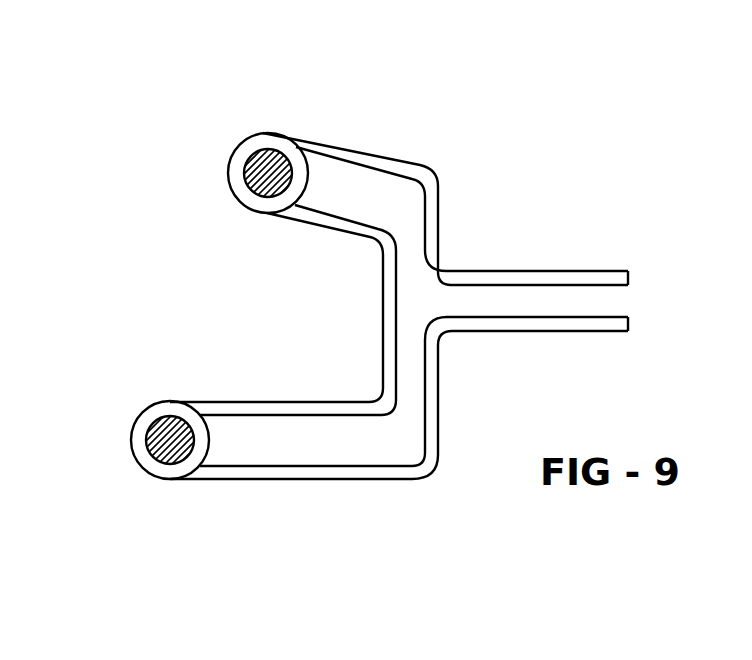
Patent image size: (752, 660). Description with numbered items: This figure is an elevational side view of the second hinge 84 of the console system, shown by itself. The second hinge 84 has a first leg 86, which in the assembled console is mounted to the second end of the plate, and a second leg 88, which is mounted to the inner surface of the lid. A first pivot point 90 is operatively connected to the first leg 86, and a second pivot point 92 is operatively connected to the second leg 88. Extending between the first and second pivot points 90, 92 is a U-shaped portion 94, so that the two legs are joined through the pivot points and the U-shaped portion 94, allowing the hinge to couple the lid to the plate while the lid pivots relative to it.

The second hinge 84 is at (482, 124).
The first leg 86 is at (437, 473).
The second leg 88 is at (421, 168).
The first pivot point 90 is at (157, 433).
The second pivot point 92 is at (258, 163).
The U-shaped portion 94 is at (382, 311).